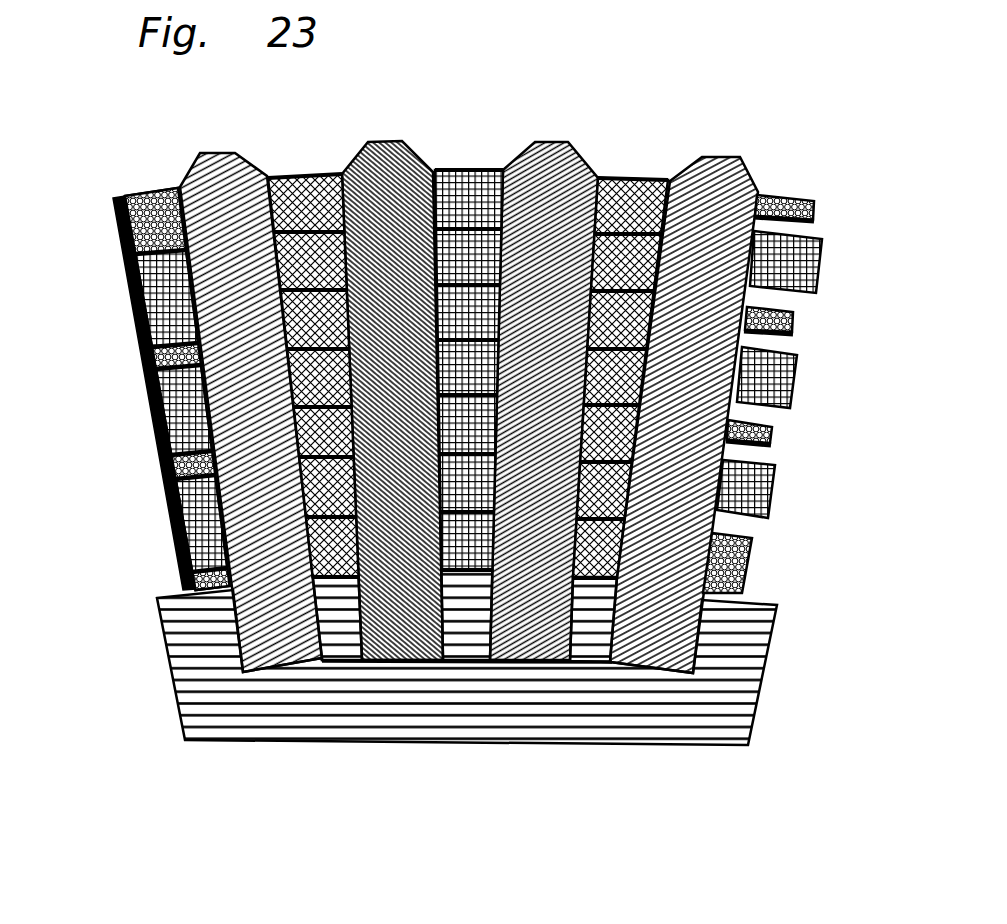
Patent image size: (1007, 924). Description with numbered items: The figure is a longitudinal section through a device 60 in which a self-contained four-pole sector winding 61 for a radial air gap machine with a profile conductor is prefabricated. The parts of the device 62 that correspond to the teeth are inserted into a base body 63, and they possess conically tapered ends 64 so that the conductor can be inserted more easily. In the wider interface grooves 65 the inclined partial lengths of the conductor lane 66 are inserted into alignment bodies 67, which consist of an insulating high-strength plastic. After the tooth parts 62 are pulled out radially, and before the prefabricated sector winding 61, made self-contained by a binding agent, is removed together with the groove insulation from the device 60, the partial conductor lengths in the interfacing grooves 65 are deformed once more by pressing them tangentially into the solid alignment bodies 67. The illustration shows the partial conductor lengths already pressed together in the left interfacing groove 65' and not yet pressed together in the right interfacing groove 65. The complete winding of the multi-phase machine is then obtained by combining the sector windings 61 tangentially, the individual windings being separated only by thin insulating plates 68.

The device 60 is at (512, 711).
The four-pole sector winding 61 is at (480, 158).
The tooth parts of the device 62 is at (670, 602).
The base body 63 is at (733, 673).
The conically tapered ends 64 is at (718, 177).
The interface groove 65 is at (829, 170).
The left interfacing groove 65' is at (133, 347).
The conductor lane 66 is at (797, 263).
The alignment bodies 67 is at (733, 563).
The insulating plates 68 is at (158, 400).